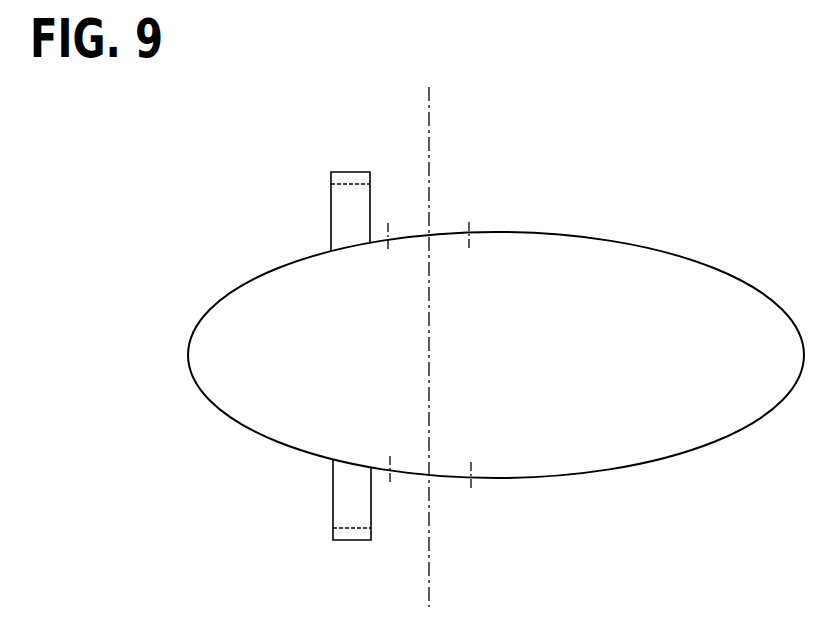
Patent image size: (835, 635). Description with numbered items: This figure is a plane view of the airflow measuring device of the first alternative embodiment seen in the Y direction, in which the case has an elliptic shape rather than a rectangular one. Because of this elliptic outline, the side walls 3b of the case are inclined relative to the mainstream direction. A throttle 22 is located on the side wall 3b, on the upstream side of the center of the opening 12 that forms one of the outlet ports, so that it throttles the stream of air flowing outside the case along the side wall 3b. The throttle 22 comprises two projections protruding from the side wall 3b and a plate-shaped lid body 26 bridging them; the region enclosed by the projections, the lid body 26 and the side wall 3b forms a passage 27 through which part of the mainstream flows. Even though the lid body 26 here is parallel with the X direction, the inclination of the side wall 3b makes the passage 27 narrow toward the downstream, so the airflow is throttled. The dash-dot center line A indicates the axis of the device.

The opening 12 is at (443, 233).
The axis A is at (430, 132).
The throttle 22 is at (338, 171).
The lid body 26 is at (354, 177).
The passage 27 is at (345, 198).
The side wall 3b is at (375, 242).